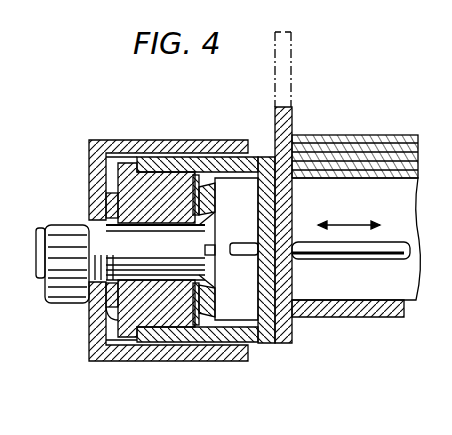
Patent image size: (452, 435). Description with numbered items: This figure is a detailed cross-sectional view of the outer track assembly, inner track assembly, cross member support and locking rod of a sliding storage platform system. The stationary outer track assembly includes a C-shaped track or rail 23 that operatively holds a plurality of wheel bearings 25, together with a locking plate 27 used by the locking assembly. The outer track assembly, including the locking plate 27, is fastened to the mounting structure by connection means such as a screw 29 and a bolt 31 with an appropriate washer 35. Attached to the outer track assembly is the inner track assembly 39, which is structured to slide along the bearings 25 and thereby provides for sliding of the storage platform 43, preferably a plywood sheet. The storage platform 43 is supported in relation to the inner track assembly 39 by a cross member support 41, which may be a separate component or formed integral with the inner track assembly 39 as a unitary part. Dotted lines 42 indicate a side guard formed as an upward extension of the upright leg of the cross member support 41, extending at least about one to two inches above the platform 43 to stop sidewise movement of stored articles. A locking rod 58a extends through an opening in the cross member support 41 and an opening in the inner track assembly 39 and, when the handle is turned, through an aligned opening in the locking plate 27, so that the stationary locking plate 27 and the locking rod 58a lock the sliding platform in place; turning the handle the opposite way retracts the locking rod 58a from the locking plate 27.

The track 23 is at (127, 138).
The wheel bearings 25 is at (172, 174).
The locking plate 27 is at (200, 330).
The screw 29 is at (217, 190).
The bolt 31 is at (68, 208).
The washer 35 is at (106, 320).
The inner track assembly 39 is at (260, 344).
The cross member support 41 is at (350, 318).
The side guard 42 is at (293, 82).
The storage platform 43 is at (369, 134).
The locking rod 58a is at (322, 250).